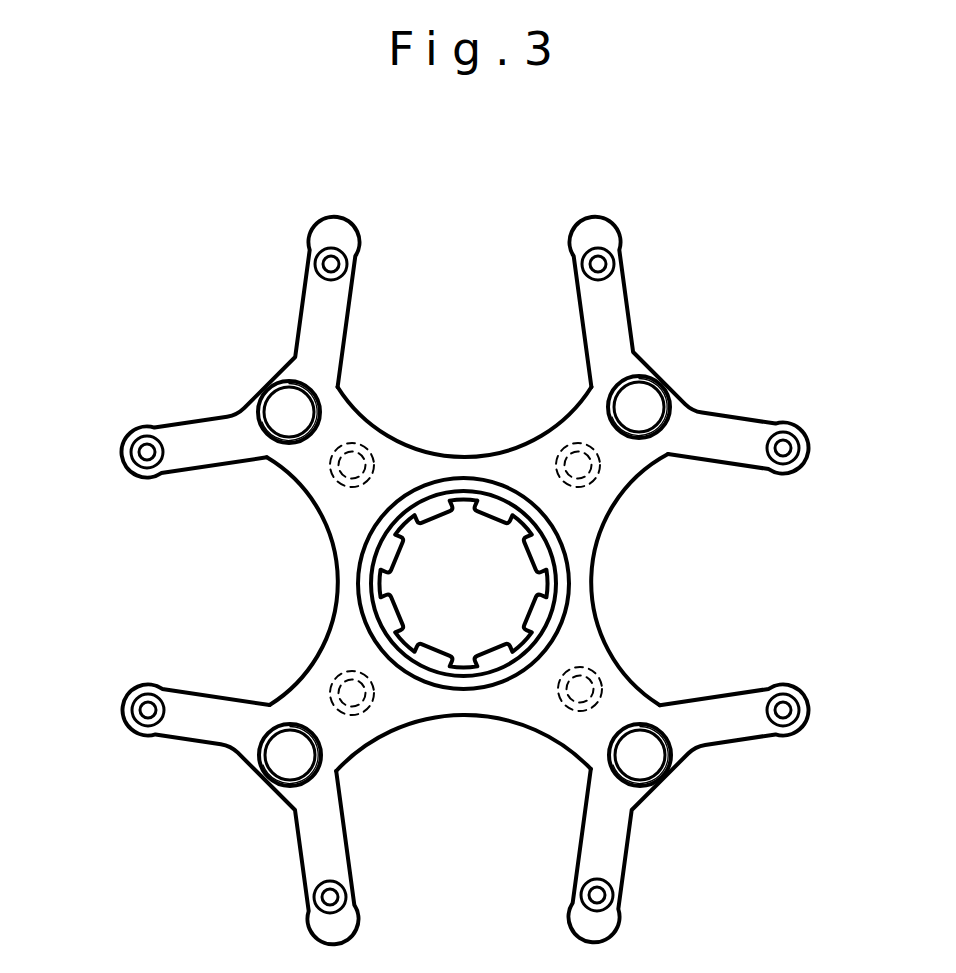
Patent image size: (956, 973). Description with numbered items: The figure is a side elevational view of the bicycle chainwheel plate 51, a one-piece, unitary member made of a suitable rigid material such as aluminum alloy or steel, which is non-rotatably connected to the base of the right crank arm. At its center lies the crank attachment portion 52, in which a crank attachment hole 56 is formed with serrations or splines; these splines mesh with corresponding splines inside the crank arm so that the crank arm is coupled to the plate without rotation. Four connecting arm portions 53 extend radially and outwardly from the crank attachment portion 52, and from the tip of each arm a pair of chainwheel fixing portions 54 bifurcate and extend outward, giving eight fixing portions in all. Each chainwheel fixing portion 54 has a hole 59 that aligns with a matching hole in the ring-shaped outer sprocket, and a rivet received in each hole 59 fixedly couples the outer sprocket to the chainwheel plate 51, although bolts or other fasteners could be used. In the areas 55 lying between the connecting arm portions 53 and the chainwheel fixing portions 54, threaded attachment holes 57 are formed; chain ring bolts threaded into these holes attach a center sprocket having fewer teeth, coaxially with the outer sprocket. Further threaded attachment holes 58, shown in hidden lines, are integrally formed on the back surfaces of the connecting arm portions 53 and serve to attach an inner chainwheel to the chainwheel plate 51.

The chainwheel plate 51 is at (176, 390).
The crank attachment portion 52 is at (333, 583).
The connecting arm portions 53 is at (551, 432).
The chainwheel fixing portions 54 is at (215, 413).
The areas 55 is at (330, 365).
The crank attachment hole 56 is at (494, 518).
The threaded attachment holes 57 is at (274, 425).
The threaded attachment holes 58 is at (330, 487).
The hole 59 is at (580, 256).